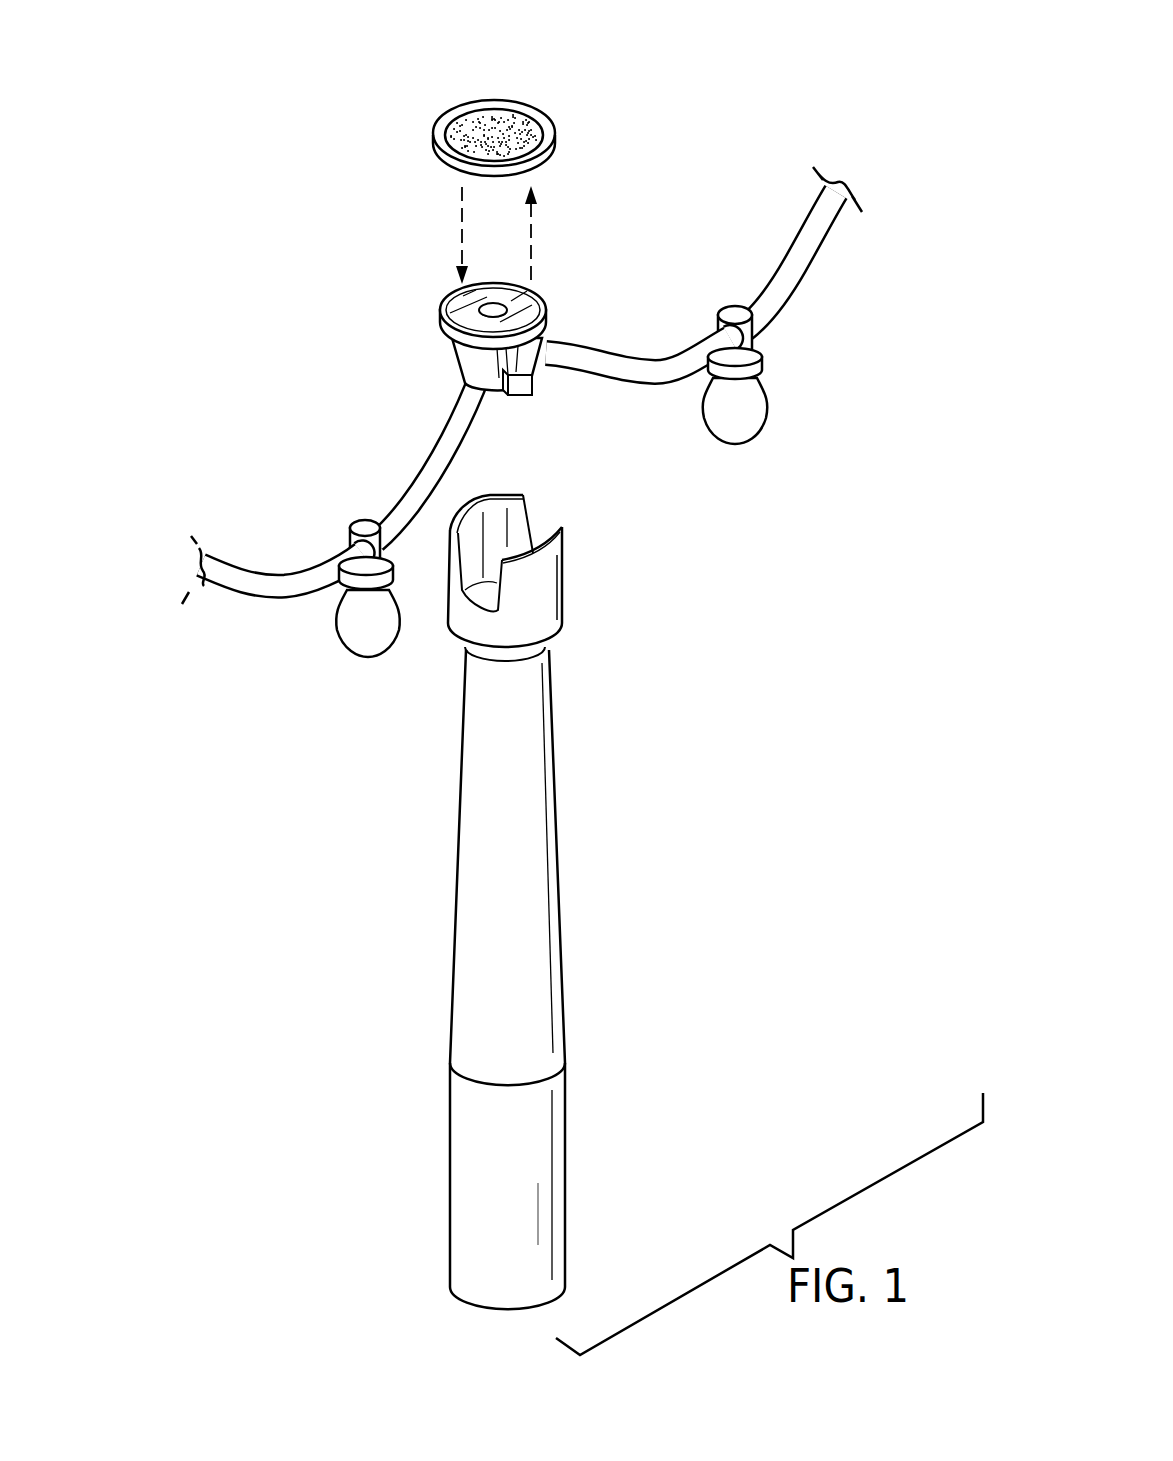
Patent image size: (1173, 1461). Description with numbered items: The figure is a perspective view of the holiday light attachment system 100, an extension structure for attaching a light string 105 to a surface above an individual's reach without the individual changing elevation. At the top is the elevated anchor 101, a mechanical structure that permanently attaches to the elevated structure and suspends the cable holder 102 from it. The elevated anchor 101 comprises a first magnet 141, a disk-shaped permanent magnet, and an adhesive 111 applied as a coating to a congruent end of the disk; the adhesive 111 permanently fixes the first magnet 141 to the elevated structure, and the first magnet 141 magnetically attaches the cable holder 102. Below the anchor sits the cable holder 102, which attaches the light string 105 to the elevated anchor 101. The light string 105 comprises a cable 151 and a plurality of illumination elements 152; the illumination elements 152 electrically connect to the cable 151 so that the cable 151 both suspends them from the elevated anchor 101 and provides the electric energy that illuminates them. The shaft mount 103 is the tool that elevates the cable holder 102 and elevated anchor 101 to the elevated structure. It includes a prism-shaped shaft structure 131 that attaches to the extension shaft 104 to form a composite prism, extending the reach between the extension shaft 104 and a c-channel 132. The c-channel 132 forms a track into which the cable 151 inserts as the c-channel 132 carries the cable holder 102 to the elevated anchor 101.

The holiday light attachment system 100 is at (165, 93).
The elevated anchor 101 is at (561, 88).
The adhesive 111 is at (481, 120).
The first magnet 141 is at (553, 154).
The cable holder 102 is at (552, 296).
The shaft mount 103 is at (633, 773).
The shaft structure 131 is at (520, 695).
The c-channel 132 is at (561, 571).
The extension shaft 104 is at (565, 1135).
The light string 105 is at (812, 283).
The cable 151 is at (438, 442).
The plurality of illumination elements 152 is at (372, 640).